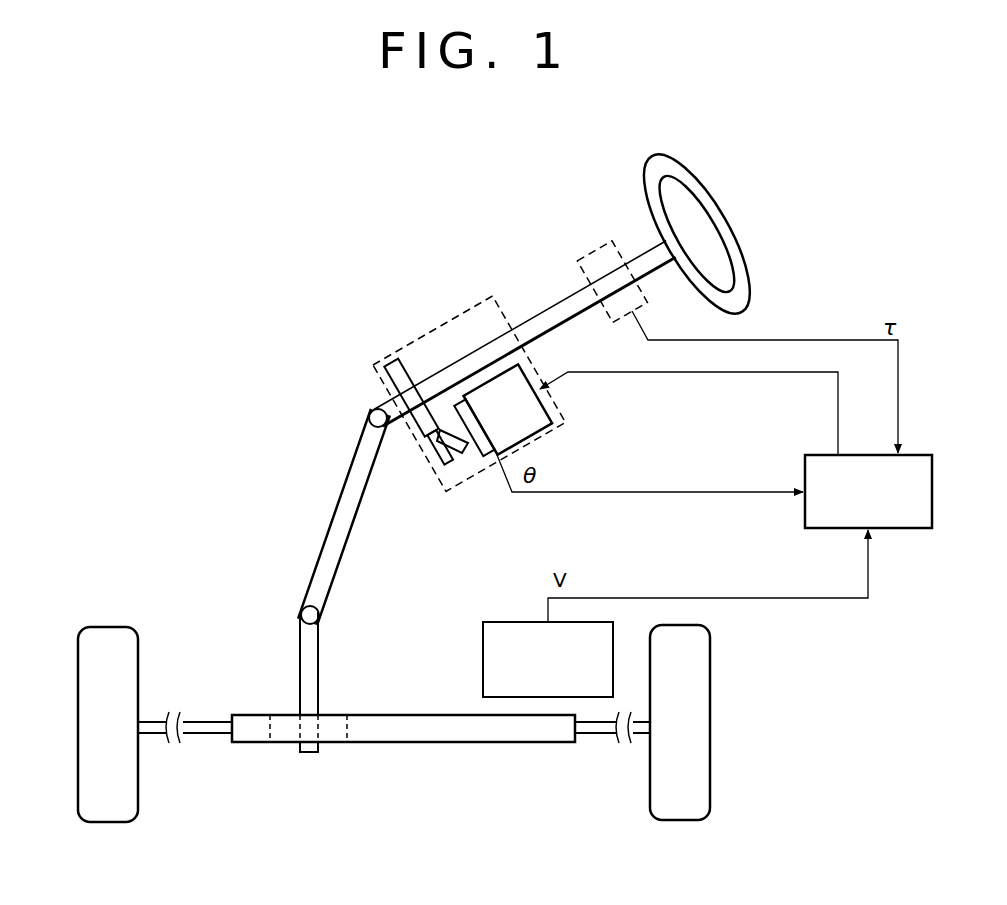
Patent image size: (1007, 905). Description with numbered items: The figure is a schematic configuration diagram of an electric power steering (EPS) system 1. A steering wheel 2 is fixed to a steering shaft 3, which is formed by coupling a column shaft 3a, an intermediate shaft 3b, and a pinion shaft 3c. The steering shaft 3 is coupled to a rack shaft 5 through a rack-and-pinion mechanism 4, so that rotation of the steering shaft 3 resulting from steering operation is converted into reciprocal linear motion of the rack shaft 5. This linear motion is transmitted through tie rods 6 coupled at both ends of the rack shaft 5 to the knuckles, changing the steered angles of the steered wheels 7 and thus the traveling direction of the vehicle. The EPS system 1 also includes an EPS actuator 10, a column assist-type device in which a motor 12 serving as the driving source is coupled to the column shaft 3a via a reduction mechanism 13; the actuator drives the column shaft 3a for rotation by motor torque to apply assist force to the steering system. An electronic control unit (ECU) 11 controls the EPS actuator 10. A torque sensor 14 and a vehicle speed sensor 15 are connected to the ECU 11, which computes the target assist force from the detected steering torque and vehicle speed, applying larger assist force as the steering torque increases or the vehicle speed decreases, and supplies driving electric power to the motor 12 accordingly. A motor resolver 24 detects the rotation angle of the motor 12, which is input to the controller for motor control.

The electric power steering system 1 is at (884, 211).
The steering wheel 2 is at (731, 226).
The steering shaft 3 is at (322, 383).
The column shaft 3a is at (377, 409).
The intermediate shaft 3b is at (337, 512).
The pinion shaft 3c is at (300, 627).
The rack-and-pinion mechanism 4 is at (332, 716).
The rack shaft 5 is at (405, 715).
The tie rods 6 is at (208, 718).
The steered wheels 7 is at (108, 627).
The EPS actuator 10 is at (440, 326).
The electronic control unit 11 is at (932, 492).
The motor 12 is at (494, 423).
The reduction mechanism 13 is at (430, 453).
The torque sensor 14 is at (592, 252).
The vehicle speed sensor 15 is at (502, 622).
The motor resolver 24 is at (480, 452).